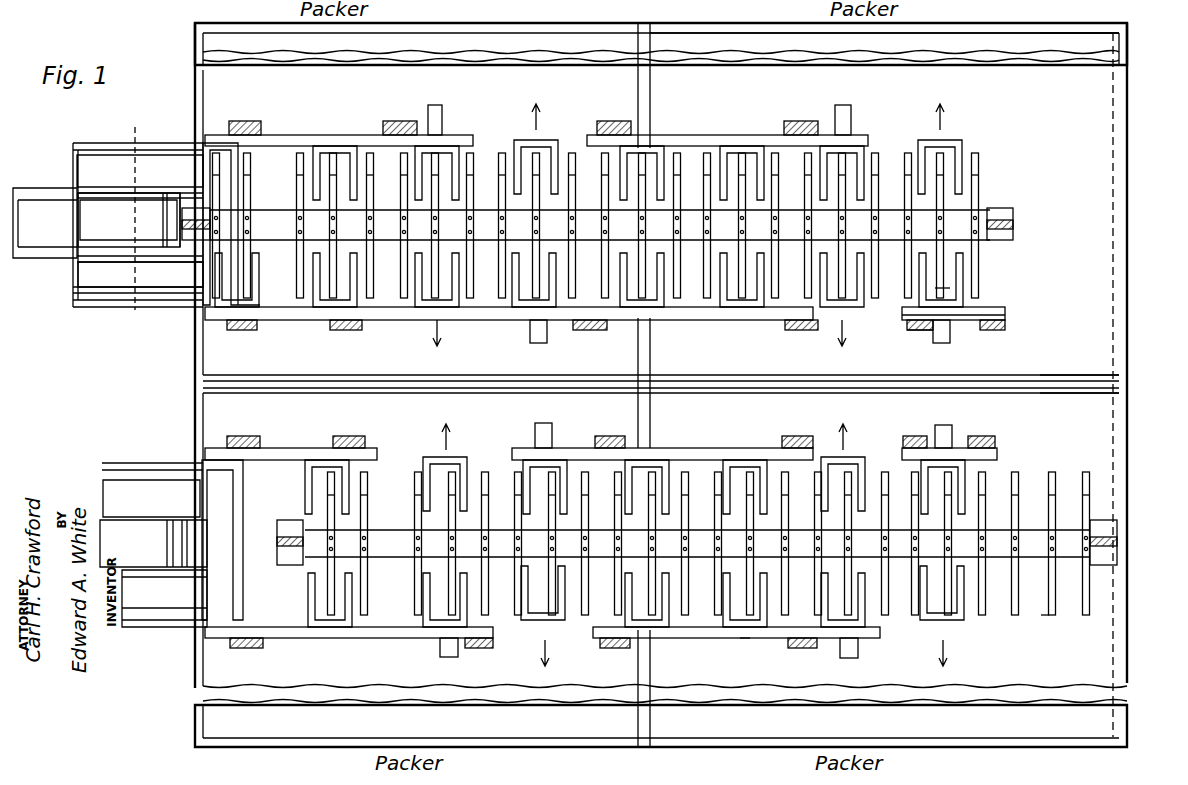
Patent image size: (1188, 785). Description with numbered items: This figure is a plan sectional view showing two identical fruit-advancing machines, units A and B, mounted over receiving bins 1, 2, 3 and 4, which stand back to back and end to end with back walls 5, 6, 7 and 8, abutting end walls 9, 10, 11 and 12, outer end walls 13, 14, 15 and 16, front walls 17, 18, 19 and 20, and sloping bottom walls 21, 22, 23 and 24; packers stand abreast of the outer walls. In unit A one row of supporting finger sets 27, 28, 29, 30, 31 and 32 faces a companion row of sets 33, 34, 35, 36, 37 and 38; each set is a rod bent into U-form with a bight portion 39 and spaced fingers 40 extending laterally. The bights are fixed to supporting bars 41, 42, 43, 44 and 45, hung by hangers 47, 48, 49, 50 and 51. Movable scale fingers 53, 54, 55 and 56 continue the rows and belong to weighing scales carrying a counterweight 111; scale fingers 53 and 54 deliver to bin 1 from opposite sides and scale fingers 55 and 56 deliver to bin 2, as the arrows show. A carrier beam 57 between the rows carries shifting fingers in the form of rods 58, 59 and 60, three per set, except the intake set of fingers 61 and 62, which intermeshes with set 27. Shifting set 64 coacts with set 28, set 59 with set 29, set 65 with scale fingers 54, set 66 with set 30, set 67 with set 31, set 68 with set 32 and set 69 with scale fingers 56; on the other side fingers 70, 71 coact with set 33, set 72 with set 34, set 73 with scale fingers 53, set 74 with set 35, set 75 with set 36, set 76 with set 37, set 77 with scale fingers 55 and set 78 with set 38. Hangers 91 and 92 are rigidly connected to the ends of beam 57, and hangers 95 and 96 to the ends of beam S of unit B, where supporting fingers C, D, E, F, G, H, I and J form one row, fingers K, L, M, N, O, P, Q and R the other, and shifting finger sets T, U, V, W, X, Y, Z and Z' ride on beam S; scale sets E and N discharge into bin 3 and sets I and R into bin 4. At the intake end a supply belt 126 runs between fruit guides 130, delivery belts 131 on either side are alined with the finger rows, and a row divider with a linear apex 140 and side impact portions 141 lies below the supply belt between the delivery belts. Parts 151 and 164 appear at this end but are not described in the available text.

The receiving bin 1 is at (205, 36).
The receiving bin 2 is at (1027, 28).
The receiving bin 3 is at (218, 723).
The receiving bin 4 is at (1022, 747).
The back wall 5 is at (219, 371).
The back wall 6 is at (1101, 371).
The back wall 7 is at (210, 398).
The back wall 8 is at (1096, 396).
The abutting end wall 9 is at (638, 358).
The abutting end wall 10 is at (650, 352).
The abutting end wall 11 is at (638, 408).
The abutting end wall 12 is at (1113, 24).
The outer end wall 13 is at (203, 52).
The outer end wall 14 is at (1127, 180).
The outer end wall 15 is at (203, 666).
The outer end wall 16 is at (1127, 457).
The front wall 17 is at (440, 23).
The front wall 18 is at (782, 23).
The front wall 19 is at (304, 747).
The front wall 20 is at (690, 747).
The bottom wall 21 is at (212, 89).
The bottom wall 22 is at (976, 33).
The bottom wall 23 is at (586, 735).
The bottom wall 24 is at (968, 735).
The set of supporting fingers 27 is at (256, 135).
The set of supporting fingers 28 is at (312, 135).
The set of supporting fingers 29 is at (446, 150).
The set of supporting fingers 30 is at (648, 148).
The set of supporting fingers 31 is at (725, 150).
The set of supporting fingers 32 is at (848, 148).
The set of supporting fingers 33 is at (216, 320).
The set of supporting fingers 34 is at (318, 320).
The set of supporting fingers 35 is at (512, 320).
The set of supporting fingers 36 is at (650, 317).
The set of supporting fingers 37 is at (731, 320).
The set of supporting fingers 38 is at (941, 343).
The bight portion 39 is at (217, 148).
The spaced fingers 40 is at (225, 163).
The supporting bar 41 is at (350, 135).
The supporting bar 42 is at (765, 135).
The supporting bar 43 is at (280, 330).
The supporting bar 44 is at (560, 325).
The supporting bar 45 is at (1005, 315).
The hanger 47 is at (246, 121).
The hanger 48 is at (612, 121).
The hanger 49 is at (341, 330).
The hanger 50 is at (593, 330).
The hanger 51 is at (915, 330).
The scale fingers 53 is at (430, 320).
The scale fingers 54 is at (553, 148).
The scale fingers 55 is at (816, 320).
The scale fingers 56 is at (952, 145).
The beam 57 is at (283, 234).
The shifting finger 58 is at (372, 153).
The shifting finger 59 is at (478, 150).
The shifting finger 60 is at (458, 158).
The shifting finger 61 is at (230, 212).
The shifting finger 62 is at (250, 182).
The shifting finger set 64 is at (332, 150).
The shifting finger set 65 is at (528, 148).
The shifting finger set 66 is at (645, 160).
The shifting finger set 67 is at (737, 153).
The shifting finger set 68 is at (850, 165).
The shifting finger set 69 is at (945, 165).
The shifting finger 70 is at (204, 298).
The shifting finger 71 is at (212, 312).
The shifting finger set 72 is at (332, 292).
The shifting finger set 73 is at (416, 296).
The shifting finger set 74 is at (520, 296).
The shifting finger set 75 is at (690, 320).
The shifting finger set 76 is at (742, 320).
The shifting finger set 77 is at (860, 306).
The shifting finger set 78 is at (950, 288).
The hanger 91 is at (192, 212).
The hanger 92 is at (1003, 215).
The hanger 95 is at (277, 534).
The hanger 96 is at (1103, 566).
The counterweight 111 is at (448, 118).
The supply belt 126 is at (30, 218).
The guides 130 is at (100, 218).
The delivery belts 131 is at (95, 165).
The linear apex 140 is at (105, 247).
The side impact and actuating portions 141 is at (98, 238).
The feed plate 151 is at (108, 278).
The feed plate 164 is at (110, 272).
The unit A is at (788, 137).
The unit B is at (697, 483).
The supporting fingers C is at (252, 462).
The supporting fingers D is at (305, 462).
The scale fingers E is at (425, 462).
The supporting fingers F is at (550, 450).
The supporting fingers G is at (655, 462).
The supporting fingers H is at (742, 462).
The scale fingers I is at (850, 462).
The supporting fingers J is at (950, 450).
The supporting fingers K is at (200, 627).
The supporting fingers L is at (326, 628).
The supporting fingers M is at (426, 630).
The scale fingers N is at (530, 624).
The supporting fingers O is at (656, 632).
The supporting fingers P is at (733, 630).
The supporting fingers Q is at (858, 648).
The scale fingers R is at (930, 622).
The beam S is at (380, 522).
The shifting finger set T is at (347, 580).
The shifting finger set U is at (367, 583).
The shifting finger set V is at (553, 620).
The shifting finger set W is at (630, 630).
The shifting finger set X is at (745, 630).
The shifting finger set Y is at (838, 630).
The shifting finger set Z is at (956, 644).
The shifting finger set Z' is at (1039, 632).